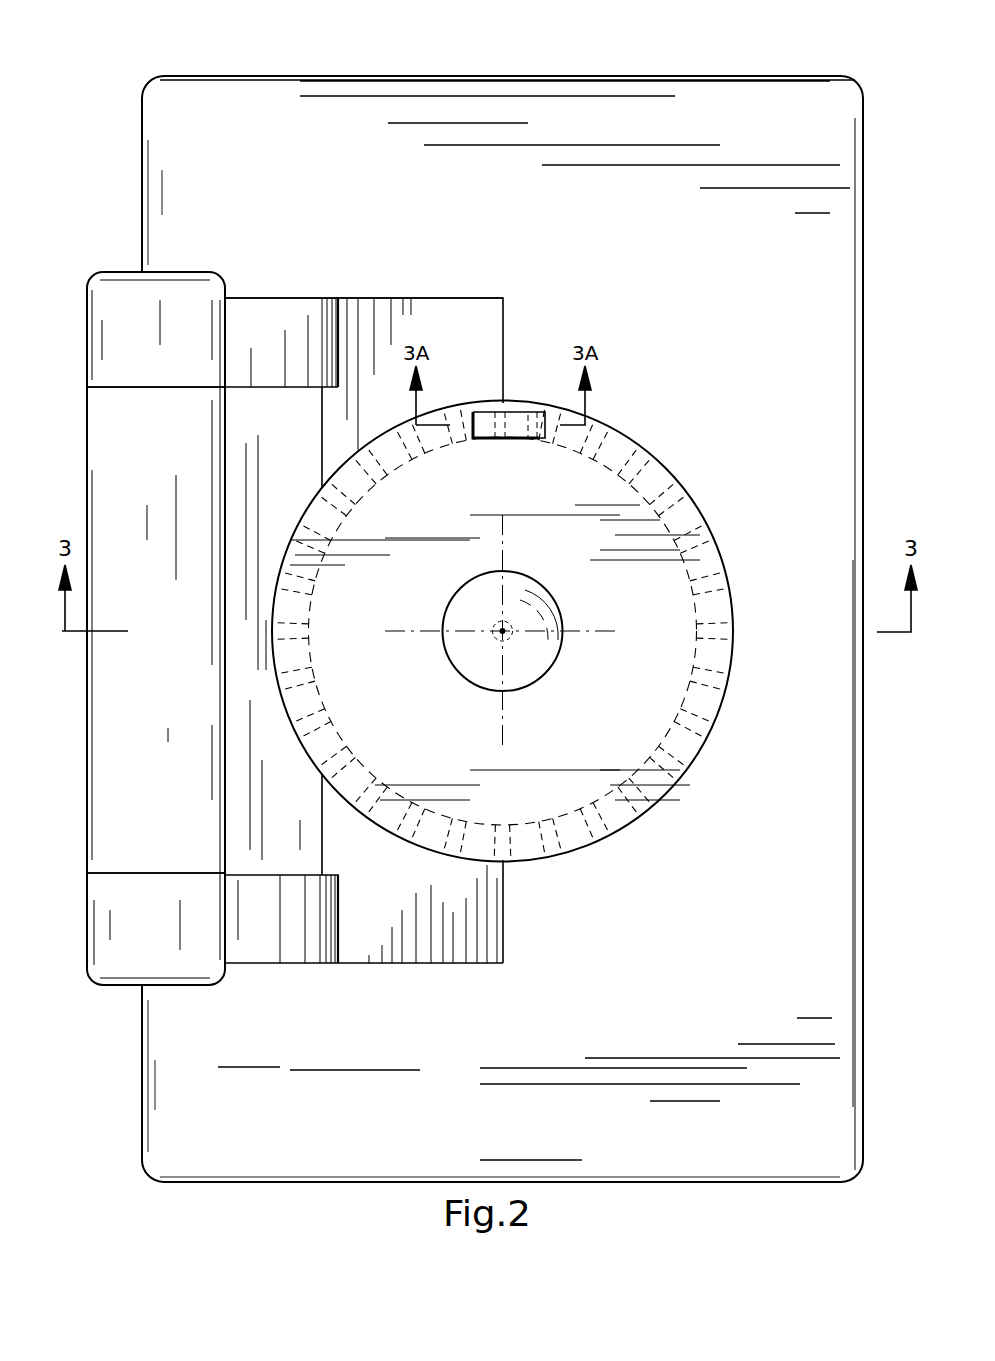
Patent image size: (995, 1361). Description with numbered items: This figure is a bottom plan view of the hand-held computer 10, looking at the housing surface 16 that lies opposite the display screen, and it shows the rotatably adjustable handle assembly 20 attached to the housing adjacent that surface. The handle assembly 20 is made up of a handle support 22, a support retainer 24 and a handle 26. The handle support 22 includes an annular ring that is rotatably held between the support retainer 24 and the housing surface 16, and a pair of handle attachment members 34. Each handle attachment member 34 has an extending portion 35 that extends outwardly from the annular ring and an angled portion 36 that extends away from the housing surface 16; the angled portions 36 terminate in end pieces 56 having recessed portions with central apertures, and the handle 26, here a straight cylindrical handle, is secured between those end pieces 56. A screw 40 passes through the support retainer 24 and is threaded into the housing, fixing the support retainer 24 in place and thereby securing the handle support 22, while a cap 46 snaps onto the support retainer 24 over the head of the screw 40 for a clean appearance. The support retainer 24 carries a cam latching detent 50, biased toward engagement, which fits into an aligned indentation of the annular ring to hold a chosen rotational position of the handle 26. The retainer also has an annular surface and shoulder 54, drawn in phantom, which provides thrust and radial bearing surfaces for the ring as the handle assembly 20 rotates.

The hand-held computer 10 is at (396, 58).
The housing surface 16 is at (668, 214).
The handle assembly 20 is at (90, 240).
The handle support 22 is at (522, 886).
The support retainer 24 is at (615, 750).
The handle 26 is at (130, 835).
The handle attachment member 34 is at (355, 262).
The extending portion 35 is at (360, 940).
The angled portion 36 is at (260, 922).
The screw 40 is at (515, 637).
The cap 46 is at (494, 615).
The detent 50 is at (487, 425).
The annular surface and shoulder 54 is at (612, 455).
The end piece 56 is at (105, 300).